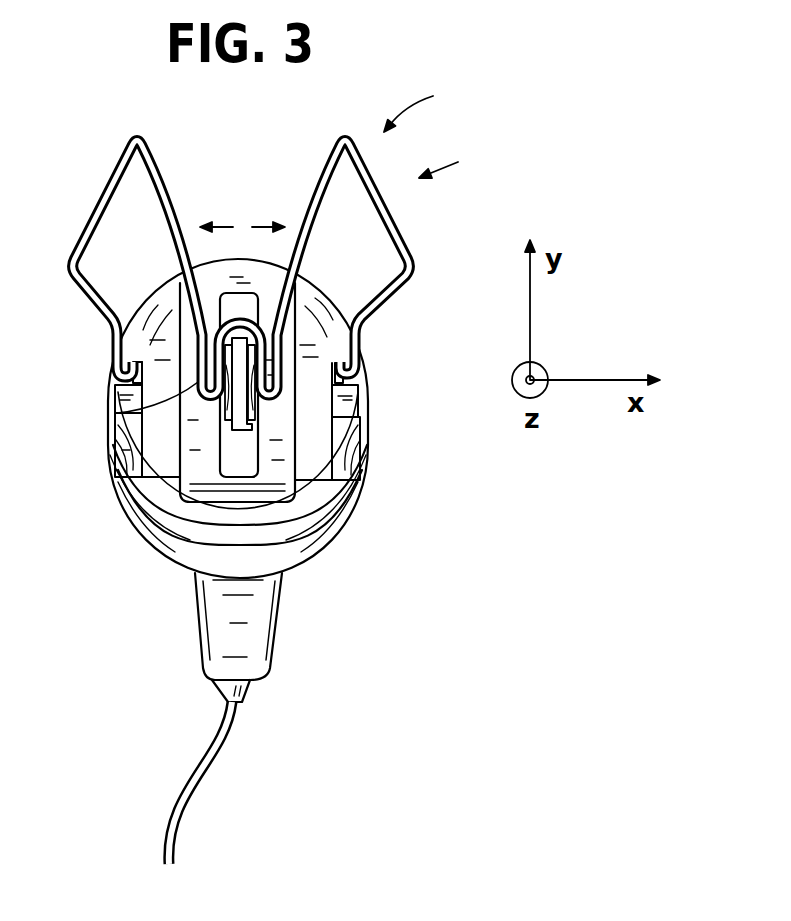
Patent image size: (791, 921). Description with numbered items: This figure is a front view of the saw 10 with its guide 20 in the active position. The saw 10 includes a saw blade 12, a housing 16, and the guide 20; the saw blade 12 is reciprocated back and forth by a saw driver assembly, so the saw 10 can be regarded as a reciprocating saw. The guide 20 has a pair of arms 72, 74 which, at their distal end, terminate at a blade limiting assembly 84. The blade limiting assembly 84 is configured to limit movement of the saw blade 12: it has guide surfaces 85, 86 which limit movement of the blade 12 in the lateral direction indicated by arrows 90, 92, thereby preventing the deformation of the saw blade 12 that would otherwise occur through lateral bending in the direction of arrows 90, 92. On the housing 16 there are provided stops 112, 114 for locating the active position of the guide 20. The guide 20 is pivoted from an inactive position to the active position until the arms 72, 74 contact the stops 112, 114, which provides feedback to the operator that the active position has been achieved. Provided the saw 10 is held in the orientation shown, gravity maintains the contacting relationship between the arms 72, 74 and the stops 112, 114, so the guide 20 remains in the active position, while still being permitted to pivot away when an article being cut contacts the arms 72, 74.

The saw 10 is at (423, 100).
The saw blade 12 is at (245, 440).
The housing 16 is at (372, 369).
The guide 20 is at (454, 157).
The arm 72 is at (109, 165).
The arm 74 is at (319, 160).
The blade limiting assembly 84 is at (117, 413).
The guide surface 85 is at (232, 405).
The guide surface 86 is at (250, 406).
The arrow 90 is at (229, 226).
The arrow 92 is at (255, 226).
The stop 112 is at (122, 400).
The stop 114 is at (348, 404).